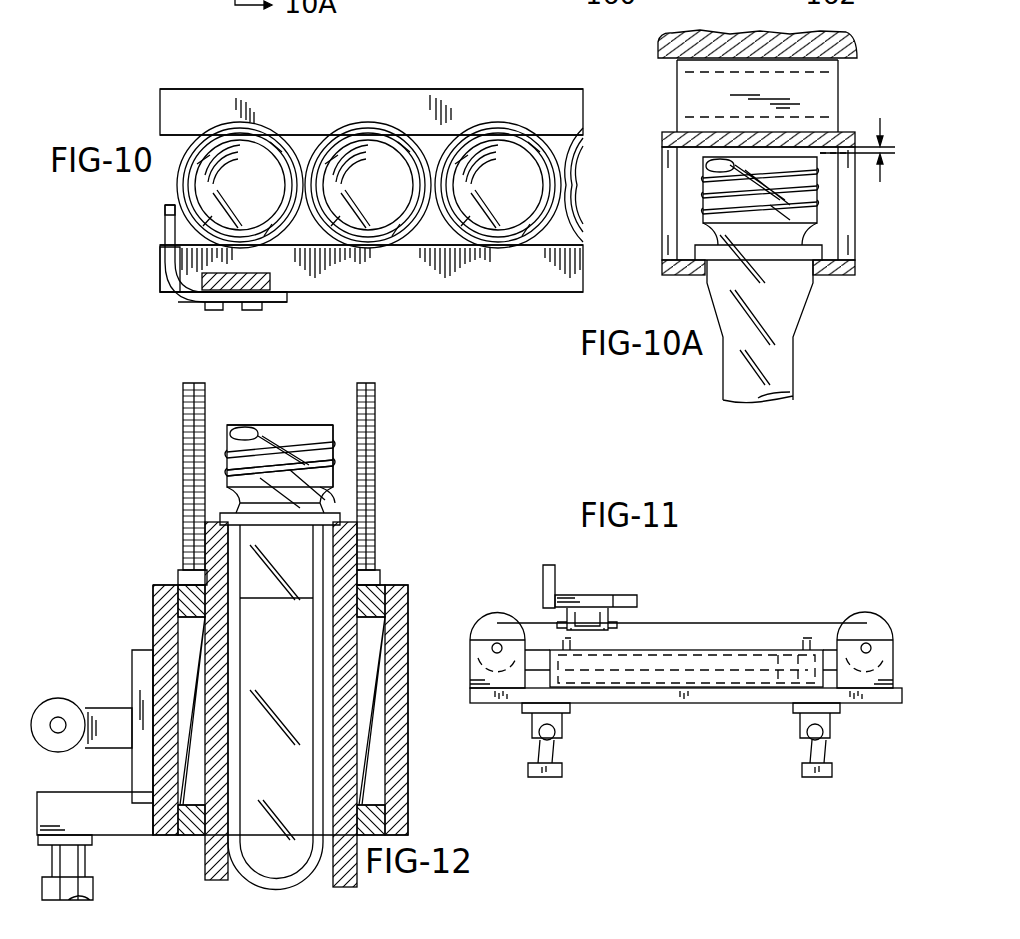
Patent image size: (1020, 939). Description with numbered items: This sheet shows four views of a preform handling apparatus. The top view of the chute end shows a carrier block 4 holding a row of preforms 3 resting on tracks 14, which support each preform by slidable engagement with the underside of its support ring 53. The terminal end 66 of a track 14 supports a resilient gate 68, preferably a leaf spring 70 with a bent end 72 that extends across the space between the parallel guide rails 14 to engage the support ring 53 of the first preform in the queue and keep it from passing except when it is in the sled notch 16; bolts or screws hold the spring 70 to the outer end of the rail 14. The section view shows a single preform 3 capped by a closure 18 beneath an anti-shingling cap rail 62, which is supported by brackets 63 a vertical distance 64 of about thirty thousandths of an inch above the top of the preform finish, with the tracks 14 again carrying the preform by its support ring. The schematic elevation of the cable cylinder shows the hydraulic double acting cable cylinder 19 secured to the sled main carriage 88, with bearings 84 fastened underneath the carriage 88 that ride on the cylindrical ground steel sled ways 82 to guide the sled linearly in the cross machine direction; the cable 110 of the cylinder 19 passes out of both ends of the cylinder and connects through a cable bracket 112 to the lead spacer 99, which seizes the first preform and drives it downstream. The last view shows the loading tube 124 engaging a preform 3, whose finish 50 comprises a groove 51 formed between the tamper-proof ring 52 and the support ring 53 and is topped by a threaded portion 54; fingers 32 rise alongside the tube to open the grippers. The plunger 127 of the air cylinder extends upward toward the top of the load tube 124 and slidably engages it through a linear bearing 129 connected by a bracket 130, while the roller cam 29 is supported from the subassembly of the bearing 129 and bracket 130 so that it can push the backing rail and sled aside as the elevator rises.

In FIG. 10, the preform 3 is at (264, 191).
In FIG. 10A, the preform 3 is at (730, 367).
In FIG. 12, the preform 3 is at (265, 422).
In FIG. 10, the container carrier block 4 is at (490, 86).
In FIG. 10A, the container carrier block 4 is at (658, 282).
In FIG. 10, the track 14 is at (418, 96).
In FIG. 10A, the track 14 is at (691, 280).
In FIG. 11, the notch 16 is at (630, 596).
In FIG. 10A, the closure cap 18 is at (725, 37).
In FIG. 11, the cable cylinder 19 is at (677, 676).
In FIG. 12, the cam 29 is at (60, 712).
In FIG. 12, the finger 32 is at (183, 402).
In FIG. 12, the finish 50 is at (335, 428).
In FIG. 12, the groove 51 is at (342, 505).
In FIG. 12, the tamper-proof ring 52 is at (340, 476).
In FIG. 12, the support ring 53 is at (220, 515).
In FIG. 12, the threaded portion 54 is at (283, 442).
In FIG. 10A, the anti-shingling cap rail 62 is at (672, 138).
In FIG. 10A, the bracket 63 is at (690, 97).
In FIG. 10A, the vertical distance 64 is at (860, 133).
In FIG. 10, the terminal end 66 is at (162, 272).
In FIG. 10, the resilient gate 68 is at (156, 238).
In FIG. 10, the leaf spring 70 is at (186, 300).
In FIG. 10, the bent end 72 is at (166, 208).
In FIG. 11, the sled way 82 is at (542, 748).
In FIG. 11, the bearing 84 is at (531, 728).
In FIG. 11, the main carriage 88 is at (616, 708).
In FIG. 11, the spacer 99 is at (545, 585).
In FIG. 11, the cable 110 is at (715, 622).
In FIG. 11, the cable bracket 112 is at (585, 597).
In FIG. 12, the loading tube 124 is at (348, 535).
In FIG. 12, the plunger 127 is at (92, 881).
In FIG. 12, the linear bearing 129 is at (146, 662).
In FIG. 12, the bracket 130 is at (160, 600).